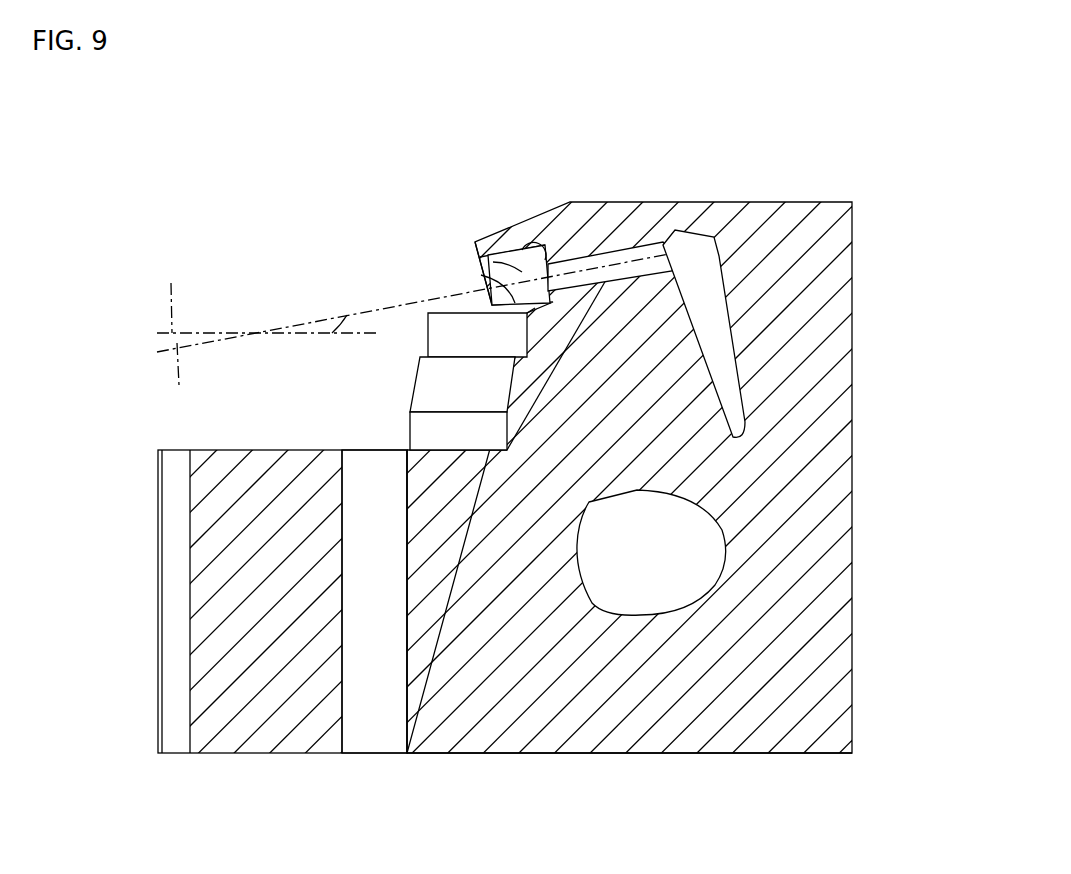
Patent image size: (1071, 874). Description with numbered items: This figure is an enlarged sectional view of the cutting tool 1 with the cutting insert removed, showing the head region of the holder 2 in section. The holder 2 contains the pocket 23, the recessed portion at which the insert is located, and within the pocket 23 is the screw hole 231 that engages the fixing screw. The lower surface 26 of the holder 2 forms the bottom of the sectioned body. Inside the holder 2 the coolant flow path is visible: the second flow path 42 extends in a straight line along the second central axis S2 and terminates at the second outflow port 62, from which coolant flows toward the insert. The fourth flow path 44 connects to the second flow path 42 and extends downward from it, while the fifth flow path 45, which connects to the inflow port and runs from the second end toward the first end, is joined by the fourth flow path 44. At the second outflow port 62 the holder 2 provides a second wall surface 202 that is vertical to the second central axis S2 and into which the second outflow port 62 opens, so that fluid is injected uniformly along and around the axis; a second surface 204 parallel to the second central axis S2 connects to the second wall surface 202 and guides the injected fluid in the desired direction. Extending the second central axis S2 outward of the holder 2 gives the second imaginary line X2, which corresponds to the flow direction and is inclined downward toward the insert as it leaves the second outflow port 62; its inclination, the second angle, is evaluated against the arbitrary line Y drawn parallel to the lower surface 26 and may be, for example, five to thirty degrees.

The cutting tool 1 is at (898, 152).
The holder 2 is at (768, 200).
The pocket 23 is at (260, 448).
The screw hole 231 is at (373, 446).
The lower surface 26 is at (505, 757).
The second flow path 42 is at (627, 248).
The fourth flow path 44 is at (703, 307).
The fifth flow path 45 is at (707, 557).
The second outflow port 62 is at (492, 262).
The second wall surface 202 is at (540, 245).
The second surface 204 is at (490, 292).
The second central axis S2 is at (583, 265).
The arbitrary line Y is at (267, 294).
The second imaginary line X2 is at (182, 383).